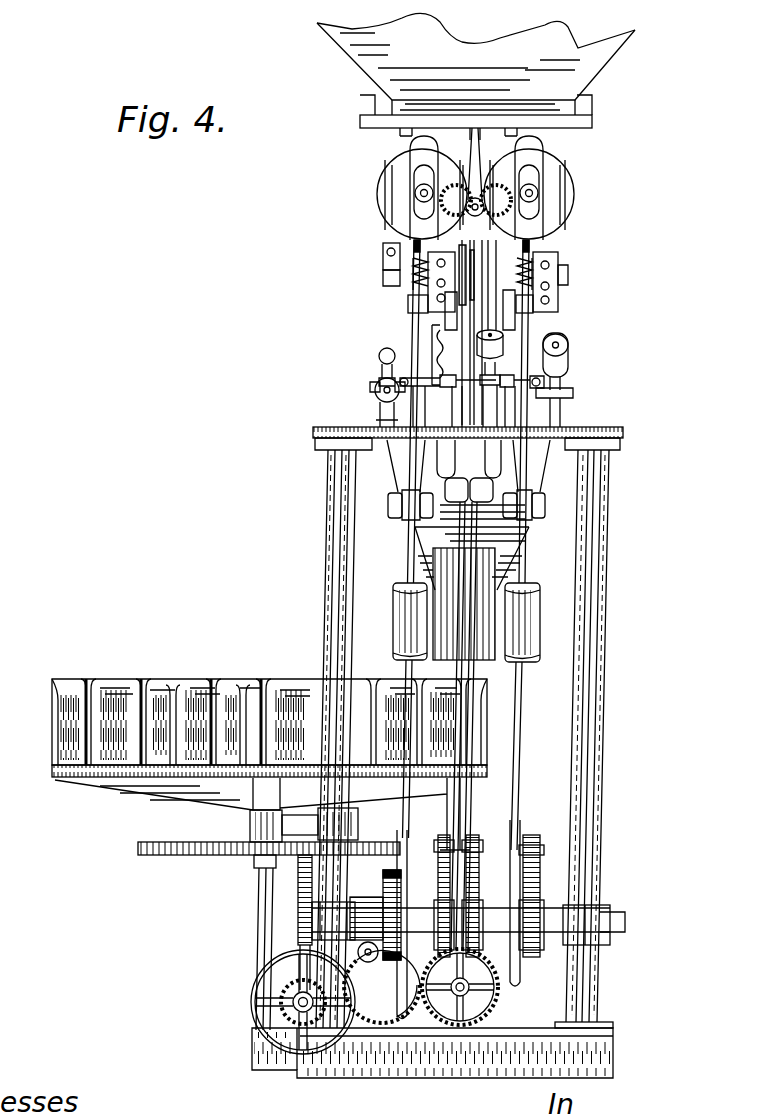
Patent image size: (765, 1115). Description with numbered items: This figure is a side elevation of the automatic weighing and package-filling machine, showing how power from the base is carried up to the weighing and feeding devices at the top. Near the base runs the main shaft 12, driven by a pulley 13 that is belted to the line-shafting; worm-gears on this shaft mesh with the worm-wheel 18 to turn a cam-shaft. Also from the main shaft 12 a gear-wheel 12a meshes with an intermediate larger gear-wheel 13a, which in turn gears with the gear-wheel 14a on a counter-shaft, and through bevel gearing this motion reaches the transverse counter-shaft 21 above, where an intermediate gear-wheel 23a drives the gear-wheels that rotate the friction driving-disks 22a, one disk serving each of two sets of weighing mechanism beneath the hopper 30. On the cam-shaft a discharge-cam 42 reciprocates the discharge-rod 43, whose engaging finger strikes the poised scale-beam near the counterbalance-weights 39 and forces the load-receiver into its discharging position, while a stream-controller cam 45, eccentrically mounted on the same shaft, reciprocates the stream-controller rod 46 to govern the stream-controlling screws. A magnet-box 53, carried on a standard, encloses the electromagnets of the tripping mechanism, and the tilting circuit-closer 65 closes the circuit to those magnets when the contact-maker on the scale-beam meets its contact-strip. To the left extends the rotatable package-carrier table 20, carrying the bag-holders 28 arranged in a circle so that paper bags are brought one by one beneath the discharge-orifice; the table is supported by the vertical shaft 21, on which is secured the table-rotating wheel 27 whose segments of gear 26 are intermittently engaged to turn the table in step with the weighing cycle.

The hopper 30 is at (476, 70).
The friction driving-disk 22a is at (597, 208).
The intermediate gear-wheel 23a is at (543, 232).
The discharge-rod 43 is at (531, 411).
The magnet-box 53 is at (438, 275).
The stream-controller rod 46 is at (468, 329).
The counterbalance-weights 39 is at (378, 378).
The tilting circuit-closer 65 is at (456, 372).
The bag-holders 28 is at (259, 690).
The package-carrier table 20 is at (206, 786).
The table-rotating wheel 27 is at (233, 853).
The segments of gear 26 is at (174, 856).
The vertical shaft 21 is at (268, 923).
The worm-wheel 18 is at (297, 900).
The discharge-cam 42 is at (385, 898).
The stream-controller cam 45 is at (444, 893).
The intermediate larger gear-wheel 13a is at (378, 1000).
The gear-wheel 14a is at (442, 1020).
The gear-wheel 12a is at (286, 987).
The pulley 13 is at (292, 1008).
The main shaft 12 is at (298, 1007).